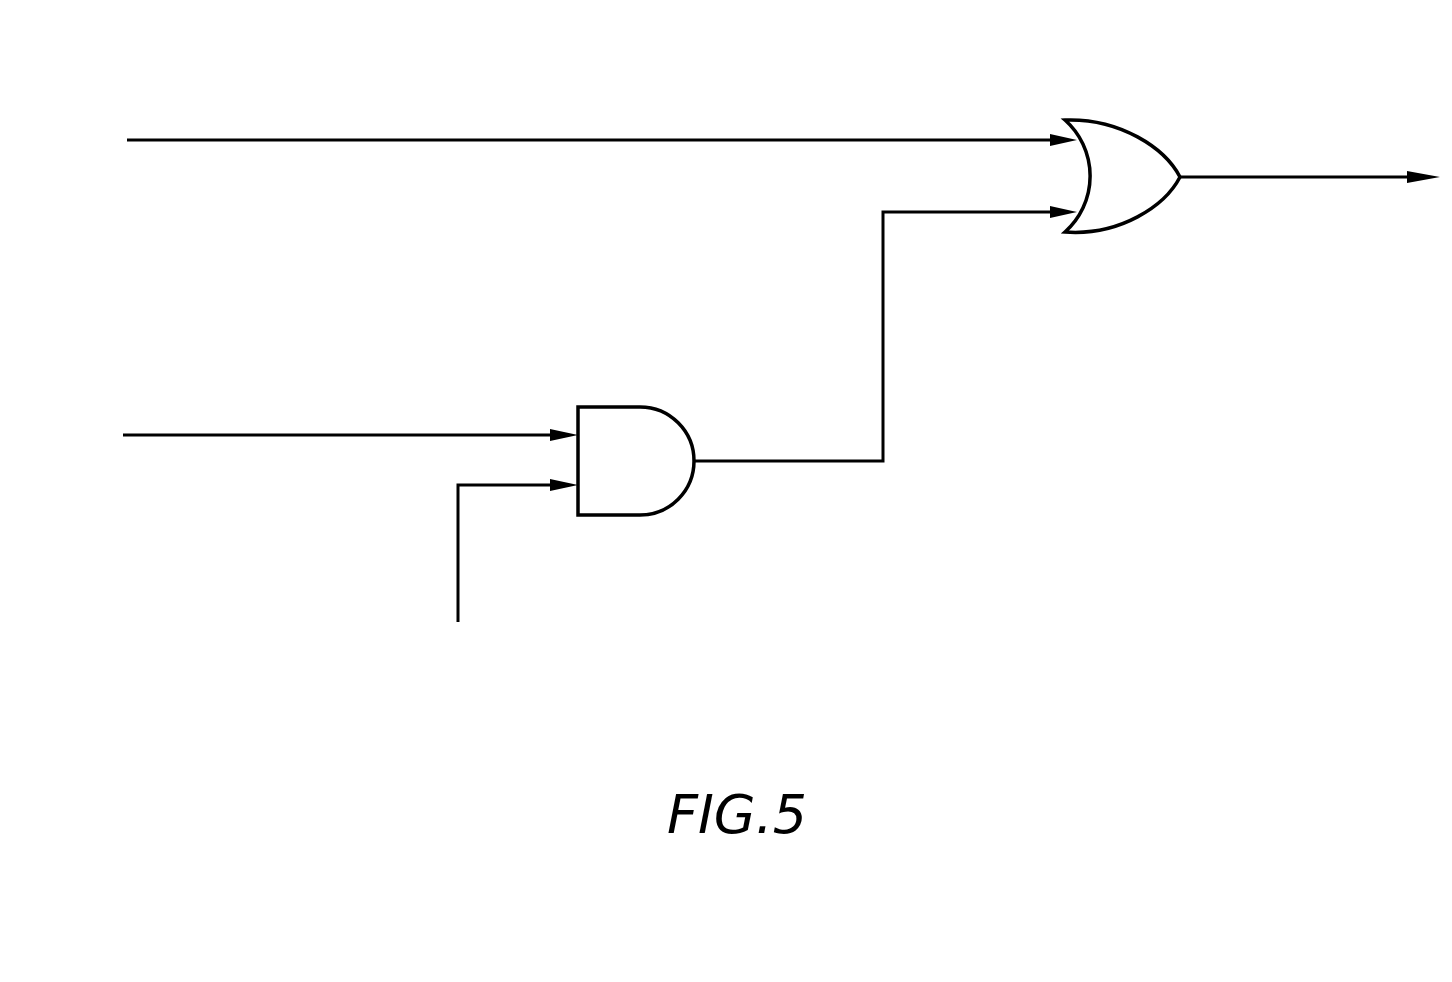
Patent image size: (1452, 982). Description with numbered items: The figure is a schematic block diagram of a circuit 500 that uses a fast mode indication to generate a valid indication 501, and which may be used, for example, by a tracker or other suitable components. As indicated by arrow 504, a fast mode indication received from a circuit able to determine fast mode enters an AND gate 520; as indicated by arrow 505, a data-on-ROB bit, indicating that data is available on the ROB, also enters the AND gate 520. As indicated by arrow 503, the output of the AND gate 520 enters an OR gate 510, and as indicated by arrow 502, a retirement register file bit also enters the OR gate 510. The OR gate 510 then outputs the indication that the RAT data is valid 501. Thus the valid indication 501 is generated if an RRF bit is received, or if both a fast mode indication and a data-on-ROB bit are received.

The circuit 500 is at (1185, 542).
The valid indication 501 is at (1310, 178).
The arrow 502 is at (976, 138).
The arrow 503 is at (983, 213).
The arrow 504 is at (520, 487).
The arrow 505 is at (500, 434).
The OR gate 510 is at (1123, 228).
The AND gate 520 is at (608, 406).